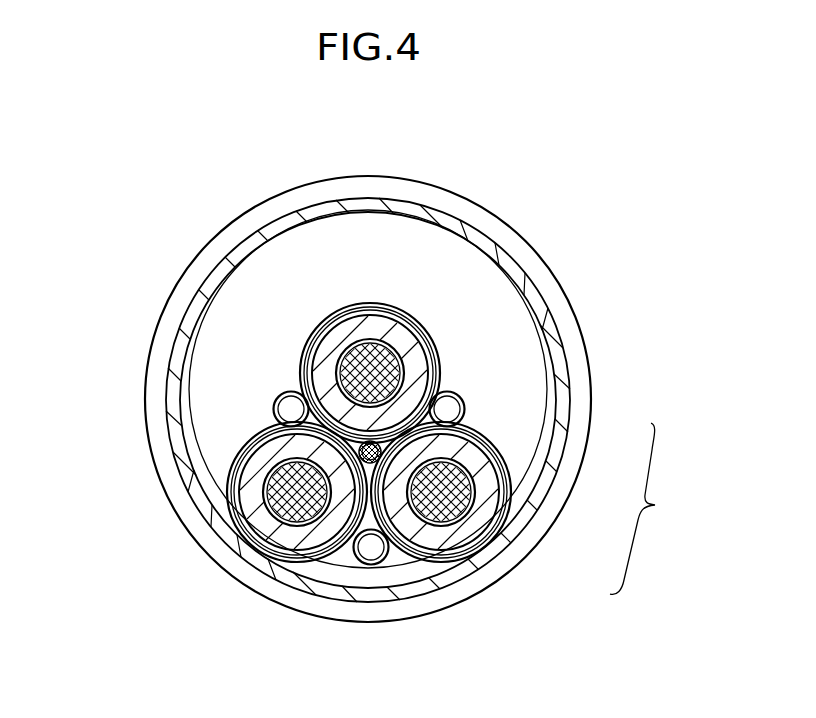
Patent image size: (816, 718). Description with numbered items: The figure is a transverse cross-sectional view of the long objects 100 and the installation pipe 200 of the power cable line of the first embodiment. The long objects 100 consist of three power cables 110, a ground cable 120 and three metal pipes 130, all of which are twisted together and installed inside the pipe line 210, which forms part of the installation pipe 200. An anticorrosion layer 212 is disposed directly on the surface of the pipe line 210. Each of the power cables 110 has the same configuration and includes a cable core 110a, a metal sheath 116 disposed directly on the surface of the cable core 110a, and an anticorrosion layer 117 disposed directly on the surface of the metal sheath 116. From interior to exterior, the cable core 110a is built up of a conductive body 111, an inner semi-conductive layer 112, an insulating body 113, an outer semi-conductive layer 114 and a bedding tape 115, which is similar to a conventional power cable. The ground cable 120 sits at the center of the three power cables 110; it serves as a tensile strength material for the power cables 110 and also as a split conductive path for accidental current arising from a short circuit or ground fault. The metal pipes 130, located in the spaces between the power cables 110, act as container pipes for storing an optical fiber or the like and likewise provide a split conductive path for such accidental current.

The long objects 100 is at (388, 440).
The power cable 110 is at (374, 461).
The cable core 110a is at (657, 508).
The conductive body 111 is at (530, 466).
The inner semi-conductive layer 112 is at (524, 489).
The insulating body 113 is at (508, 492).
The outer semi-conductive layer 114 is at (505, 494).
The bedding tape 115 is at (497, 506).
The metal sheath 116 is at (483, 522).
The anticorrosion layer 117 is at (462, 530).
The ground cable 120 is at (257, 437).
The metal pipe 130 is at (278, 398).
The installation pipe 200 is at (416, 399).
The pipe line 210 is at (513, 231).
The anticorrosion layer 212 is at (532, 263).